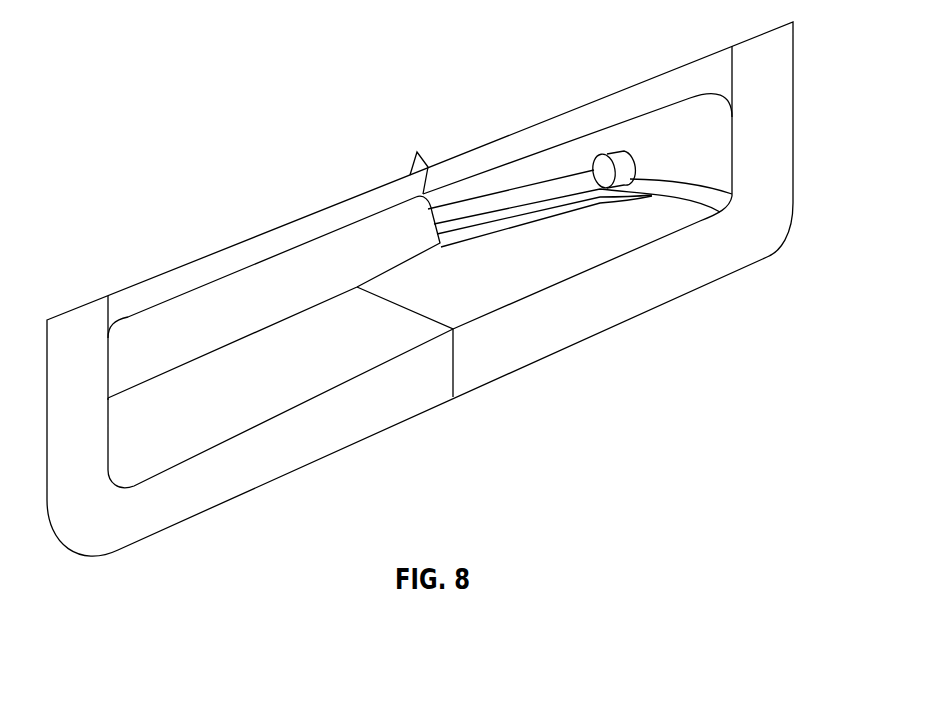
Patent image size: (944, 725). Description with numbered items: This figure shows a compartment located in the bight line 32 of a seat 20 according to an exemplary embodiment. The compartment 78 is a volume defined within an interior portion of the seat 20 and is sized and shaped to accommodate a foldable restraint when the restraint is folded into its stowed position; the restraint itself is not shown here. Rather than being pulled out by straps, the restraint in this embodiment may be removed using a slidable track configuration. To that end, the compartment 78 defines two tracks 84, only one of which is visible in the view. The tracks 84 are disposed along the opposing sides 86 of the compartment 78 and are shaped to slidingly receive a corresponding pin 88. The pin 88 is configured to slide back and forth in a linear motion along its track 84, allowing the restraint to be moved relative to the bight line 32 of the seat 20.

The seat 20 is at (713, 263).
The bight line 32 is at (767, 133).
The compartment 78 is at (142, 348).
The track 84 is at (516, 195).
The opposing side 86 is at (143, 422).
The pin 88 is at (635, 168).